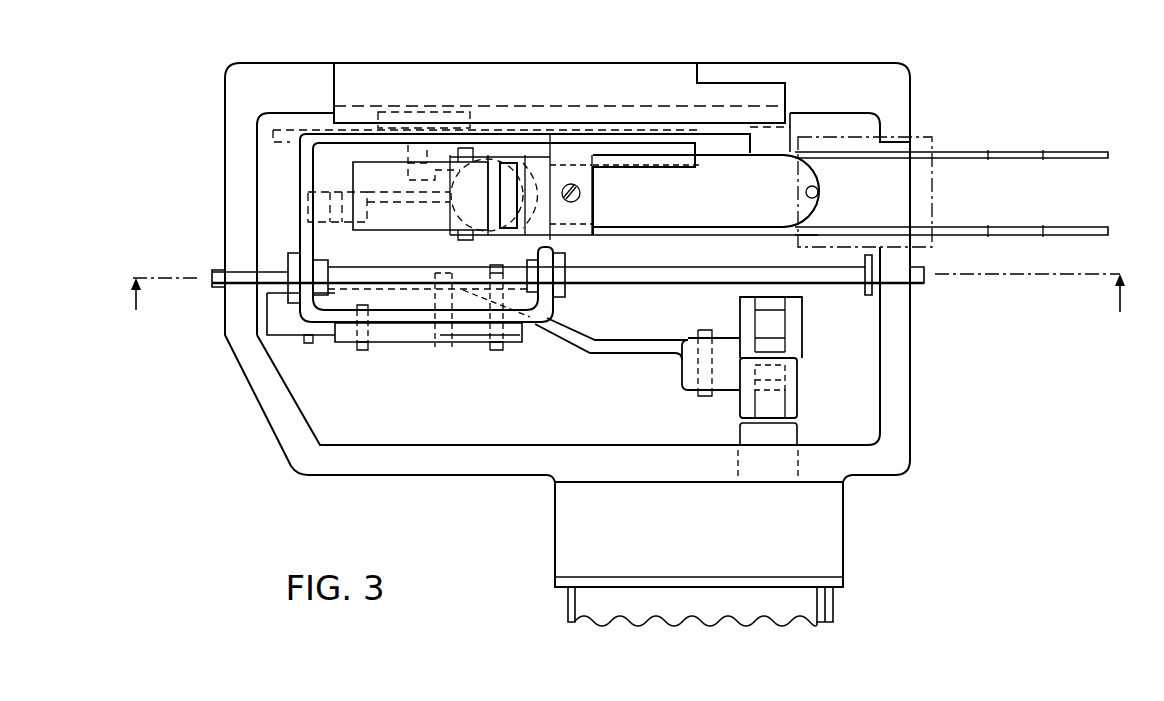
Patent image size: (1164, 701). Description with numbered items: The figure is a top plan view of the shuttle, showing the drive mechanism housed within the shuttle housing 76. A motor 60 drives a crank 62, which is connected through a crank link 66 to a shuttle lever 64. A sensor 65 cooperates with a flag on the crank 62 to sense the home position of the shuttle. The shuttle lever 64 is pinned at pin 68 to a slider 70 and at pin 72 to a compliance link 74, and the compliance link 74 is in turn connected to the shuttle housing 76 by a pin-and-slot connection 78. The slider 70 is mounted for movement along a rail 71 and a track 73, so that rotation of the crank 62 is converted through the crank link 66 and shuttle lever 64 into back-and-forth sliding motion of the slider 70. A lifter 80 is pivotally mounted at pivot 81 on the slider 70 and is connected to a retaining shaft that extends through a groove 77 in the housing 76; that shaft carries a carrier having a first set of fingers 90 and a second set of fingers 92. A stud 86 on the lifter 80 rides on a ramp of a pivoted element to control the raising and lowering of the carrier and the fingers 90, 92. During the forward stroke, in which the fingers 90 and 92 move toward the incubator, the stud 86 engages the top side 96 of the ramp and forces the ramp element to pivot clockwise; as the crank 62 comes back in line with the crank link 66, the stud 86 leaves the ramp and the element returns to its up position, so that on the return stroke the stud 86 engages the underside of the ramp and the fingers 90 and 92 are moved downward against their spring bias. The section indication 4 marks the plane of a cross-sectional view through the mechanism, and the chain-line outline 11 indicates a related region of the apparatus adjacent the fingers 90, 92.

The section line 4- 4 is at (628, 309).
The cross-section indicator 11 is at (932, 137).
The motor 60 is at (845, 534).
The crank 62 is at (800, 405).
The shuttle lever 64 is at (387, 350).
The sensor 65 is at (804, 338).
The crank link 66 is at (620, 353).
The pin 68 is at (361, 352).
The slider 70 is at (300, 180).
The rail 71 is at (654, 283).
The pin 72 is at (500, 350).
The track 73 is at (575, 104).
The compliance link 74 is at (275, 337).
The shuttle housing 76 is at (224, 128).
The groove 77 is at (818, 193).
The pin-and-slot connection 78 is at (308, 345).
The lifter 80 is at (386, 200).
The pivot 81 is at (336, 190).
The stud 86 is at (422, 203).
The first set of fingers 90 is at (780, 217).
The second set of fingers 92 is at (1068, 158).
The top side of ramp 96 is at (642, 167).